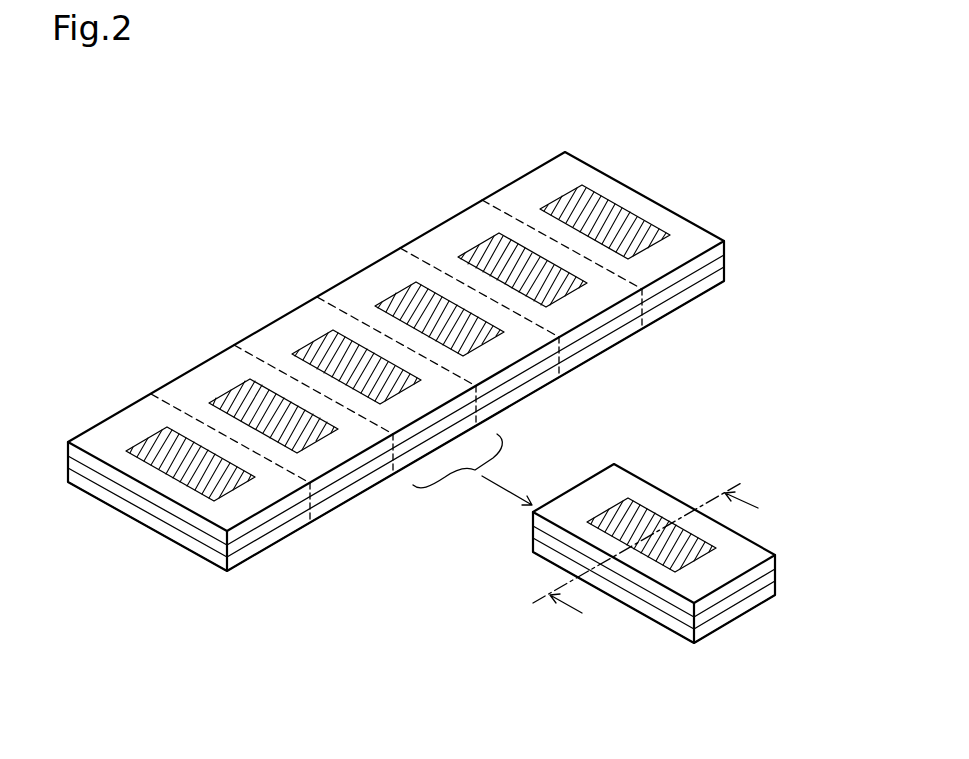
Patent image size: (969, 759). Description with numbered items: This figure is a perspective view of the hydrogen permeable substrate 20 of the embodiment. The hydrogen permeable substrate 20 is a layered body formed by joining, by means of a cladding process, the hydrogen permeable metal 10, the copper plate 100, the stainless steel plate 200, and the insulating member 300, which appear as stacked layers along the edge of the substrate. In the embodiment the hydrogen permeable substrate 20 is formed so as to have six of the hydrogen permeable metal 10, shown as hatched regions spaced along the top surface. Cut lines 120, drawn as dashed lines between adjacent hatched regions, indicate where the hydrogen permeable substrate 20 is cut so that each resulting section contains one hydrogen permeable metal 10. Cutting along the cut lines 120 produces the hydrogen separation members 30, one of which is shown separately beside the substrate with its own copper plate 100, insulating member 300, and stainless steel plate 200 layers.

The hydrogen permeable substrate 20 is at (565, 127).
The hydrogen permeable metal 10 is at (618, 215).
The cut lines 120 is at (529, 226).
The hydrogen separation member 30 is at (645, 443).
The copper plate 100 is at (727, 243).
The insulating member 300 is at (727, 263).
The stainless steel plate 200 is at (727, 278).